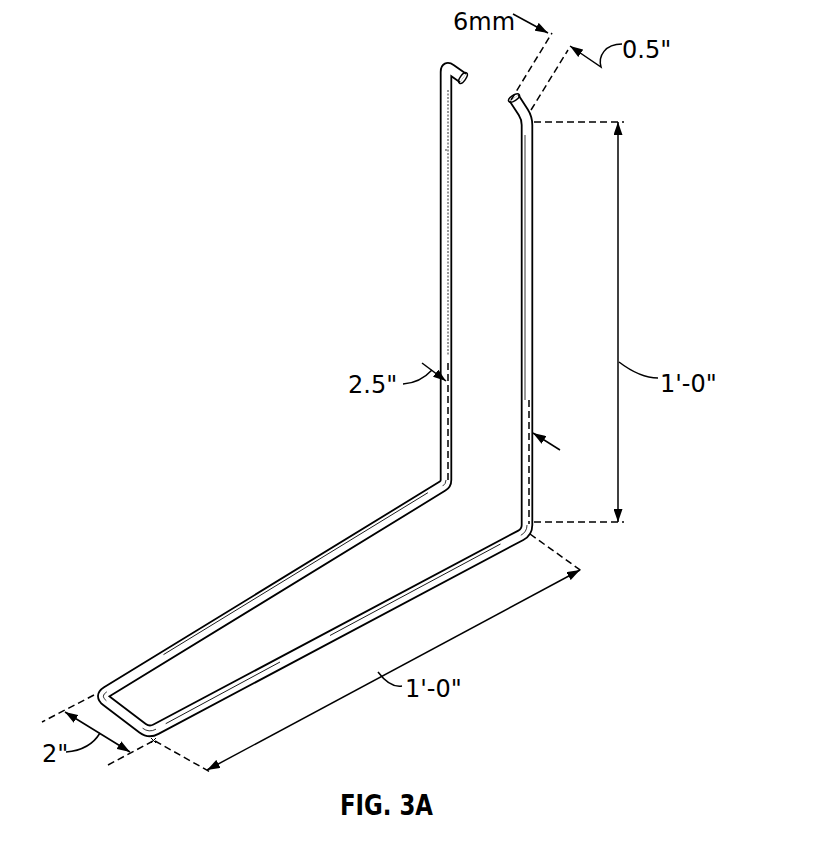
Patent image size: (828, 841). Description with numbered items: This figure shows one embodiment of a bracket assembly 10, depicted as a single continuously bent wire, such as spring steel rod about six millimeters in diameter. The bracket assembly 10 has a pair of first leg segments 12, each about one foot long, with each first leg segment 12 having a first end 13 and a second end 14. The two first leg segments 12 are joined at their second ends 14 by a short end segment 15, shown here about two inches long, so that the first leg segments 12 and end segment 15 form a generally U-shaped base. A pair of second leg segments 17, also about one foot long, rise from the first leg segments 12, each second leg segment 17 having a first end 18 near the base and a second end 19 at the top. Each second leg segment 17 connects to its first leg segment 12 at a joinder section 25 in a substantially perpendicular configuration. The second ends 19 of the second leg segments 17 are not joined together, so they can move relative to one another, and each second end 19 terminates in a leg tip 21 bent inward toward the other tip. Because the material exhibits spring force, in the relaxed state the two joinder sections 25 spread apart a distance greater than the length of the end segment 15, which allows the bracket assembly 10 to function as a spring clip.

The bracket assembly 10 is at (330, 318).
The first leg segment 12 is at (293, 571).
The first end 13 is at (446, 490).
The second end 14 is at (104, 687).
The end segment 15 is at (118, 700).
The second leg segment 17 is at (440, 250).
The first end 18 is at (440, 447).
The second end 19 is at (441, 108).
The leg tip 21 is at (446, 66).
The joinder section 25 is at (441, 480).